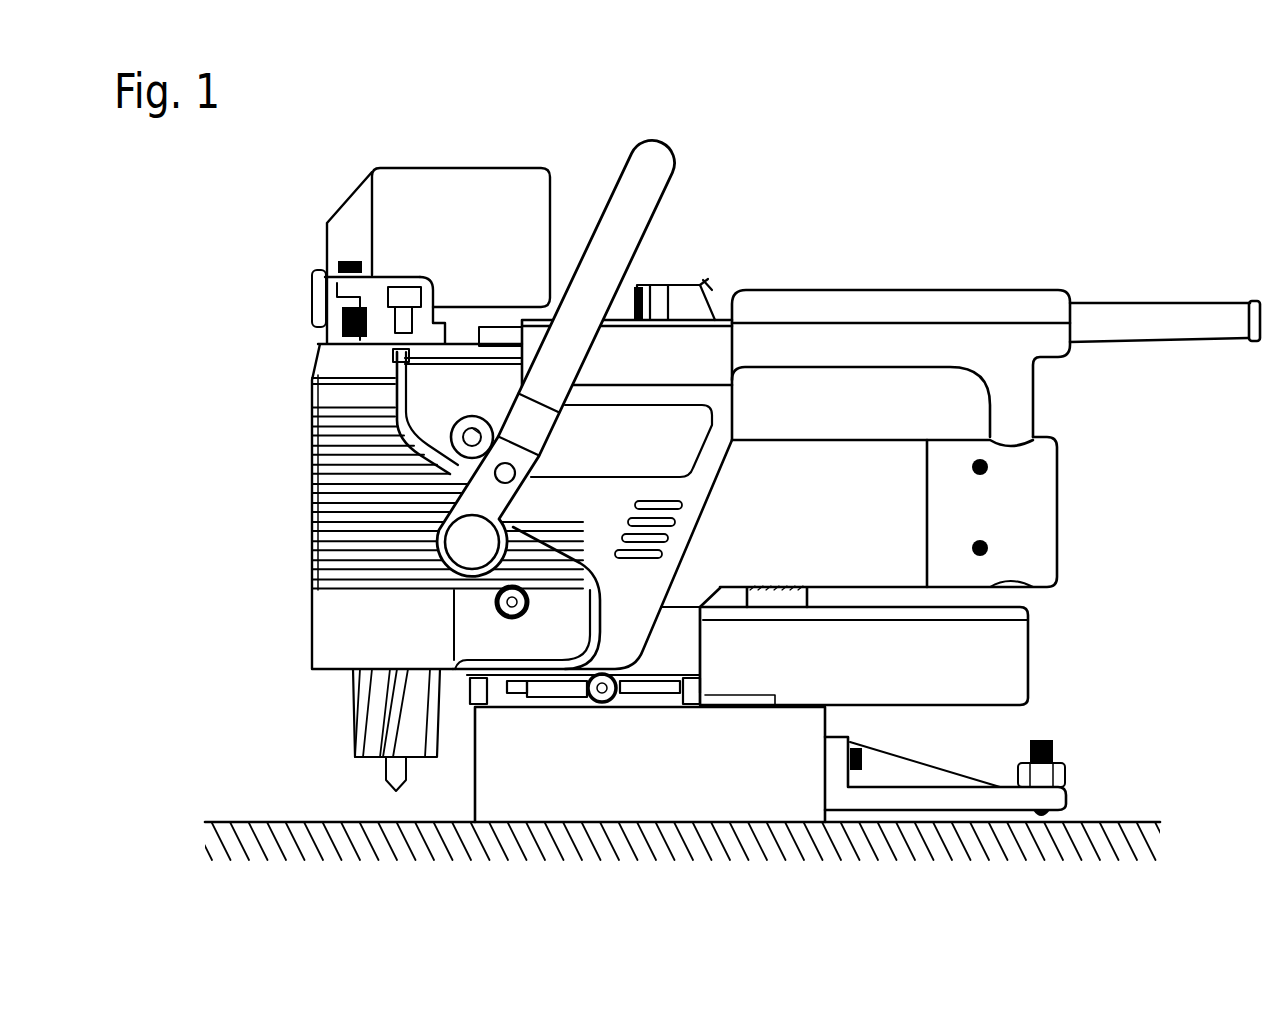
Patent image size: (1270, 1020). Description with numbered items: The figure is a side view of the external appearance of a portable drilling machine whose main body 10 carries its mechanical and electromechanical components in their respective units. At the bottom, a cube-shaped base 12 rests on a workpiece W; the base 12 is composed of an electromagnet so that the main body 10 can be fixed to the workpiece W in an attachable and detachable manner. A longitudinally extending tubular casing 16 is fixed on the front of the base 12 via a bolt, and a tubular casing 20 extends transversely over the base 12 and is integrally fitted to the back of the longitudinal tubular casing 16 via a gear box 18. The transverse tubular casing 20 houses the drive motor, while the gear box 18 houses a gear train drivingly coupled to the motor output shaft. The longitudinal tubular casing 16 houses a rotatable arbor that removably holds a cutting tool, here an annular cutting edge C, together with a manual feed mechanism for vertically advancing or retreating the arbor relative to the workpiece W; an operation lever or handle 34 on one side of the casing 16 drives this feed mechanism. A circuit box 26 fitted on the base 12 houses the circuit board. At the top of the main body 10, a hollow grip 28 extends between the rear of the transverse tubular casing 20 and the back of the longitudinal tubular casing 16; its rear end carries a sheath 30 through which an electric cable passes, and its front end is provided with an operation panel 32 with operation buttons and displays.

The main body 10 is at (737, 475).
The base 12 is at (477, 780).
The longitudinal tubular casing 16 is at (310, 455).
The gear box 18 is at (633, 385).
The transverse tubular casing 20 is at (860, 440).
The circuit box 26 is at (1030, 652).
The grip 28 is at (893, 290).
The sheath 30 is at (1150, 305).
The operation panel 32 is at (625, 300).
The operation lever or handle 34 is at (624, 165).
The annular cutting edge C is at (352, 717).
The workpiece W is at (258, 820).